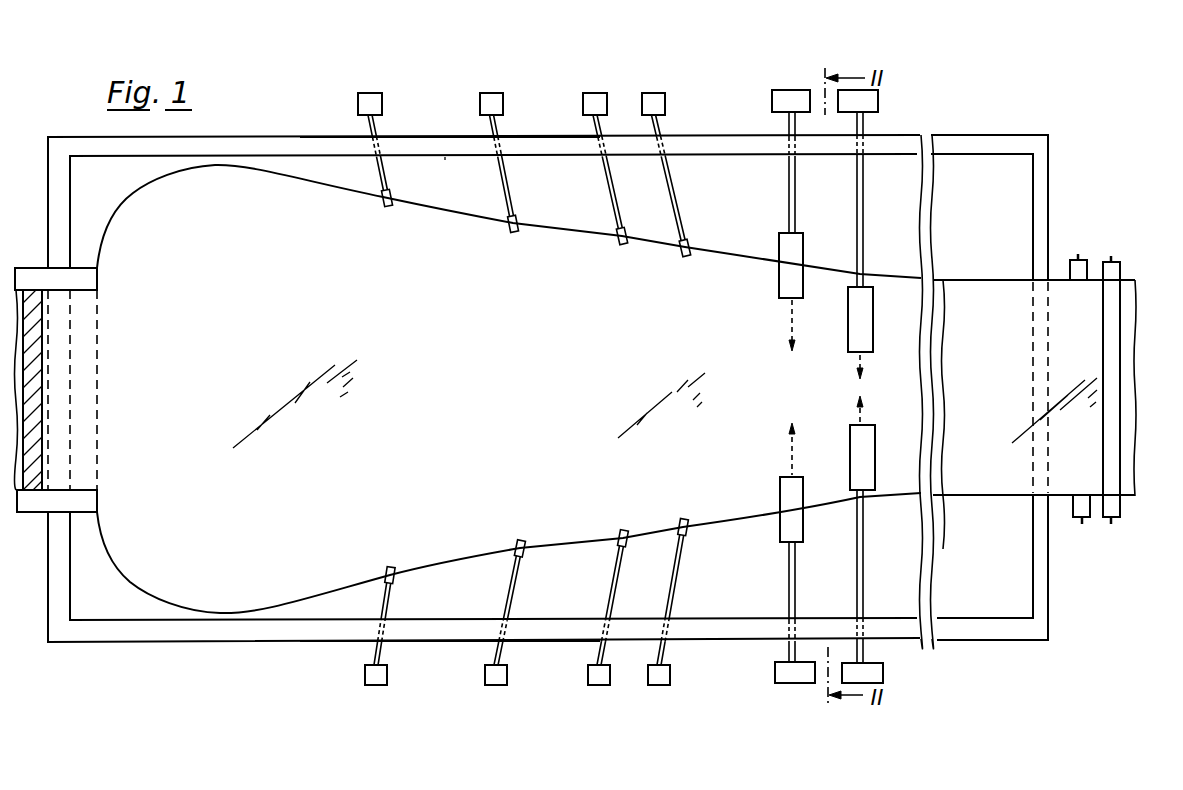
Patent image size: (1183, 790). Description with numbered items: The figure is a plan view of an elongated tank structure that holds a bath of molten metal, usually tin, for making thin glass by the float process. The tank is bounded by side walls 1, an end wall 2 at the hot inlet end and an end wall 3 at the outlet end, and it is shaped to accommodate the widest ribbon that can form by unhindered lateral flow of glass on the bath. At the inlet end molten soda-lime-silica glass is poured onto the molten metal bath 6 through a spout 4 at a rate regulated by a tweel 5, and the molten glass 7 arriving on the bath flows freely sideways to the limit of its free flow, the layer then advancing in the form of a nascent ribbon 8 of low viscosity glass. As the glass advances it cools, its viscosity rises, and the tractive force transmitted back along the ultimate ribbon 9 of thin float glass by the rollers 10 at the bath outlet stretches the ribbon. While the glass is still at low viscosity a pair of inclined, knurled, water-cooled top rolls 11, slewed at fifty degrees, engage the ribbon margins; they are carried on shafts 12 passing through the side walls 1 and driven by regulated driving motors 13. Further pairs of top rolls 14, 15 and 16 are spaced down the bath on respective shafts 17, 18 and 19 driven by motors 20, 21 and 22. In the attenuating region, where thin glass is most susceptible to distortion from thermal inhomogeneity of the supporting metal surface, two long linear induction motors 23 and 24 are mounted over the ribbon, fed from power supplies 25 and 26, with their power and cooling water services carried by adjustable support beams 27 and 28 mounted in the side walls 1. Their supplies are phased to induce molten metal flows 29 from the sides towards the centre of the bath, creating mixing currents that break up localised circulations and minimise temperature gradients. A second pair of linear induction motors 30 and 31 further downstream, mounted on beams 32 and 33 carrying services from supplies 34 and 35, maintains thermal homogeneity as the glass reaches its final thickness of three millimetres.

The side walls 1 is at (268, 144).
The end wall 2 is at (58, 185).
The end wall 3 is at (1043, 205).
The spout 4 is at (34, 506).
The tweel 5 is at (34, 292).
The molten metal bath 6 is at (448, 176).
The molten glass 7 is at (118, 404).
The glass bulb 8 is at (221, 406).
The ultimate ribbon 9 is at (983, 397).
The rollers 10 is at (1080, 268).
The top rolls 11 is at (382, 210).
The shafts 12 is at (378, 125).
The driving motors 13 is at (374, 100).
The top rolls 14 is at (510, 236).
The top rolls 15 is at (620, 246).
The top rolls 16 is at (683, 258).
The shafts 17 is at (500, 125).
The shafts 18 is at (603, 126).
The shafts 19 is at (662, 125).
The motors 20 is at (497, 100).
The motors 21 is at (595, 98).
The motors 22 is at (660, 98).
The linear induction motor 23 is at (797, 252).
The linear induction motor 24 is at (798, 524).
The power supply 25 is at (782, 103).
The power supply 26 is at (787, 678).
The adjustable support beam 27 is at (788, 195).
The adjustable support beam 28 is at (788, 583).
The molten metal flows 29 is at (785, 320).
The linear induction motor 30 is at (862, 320).
The linear induction motor 31 is at (862, 458).
The beam 32 is at (863, 184).
The beam 33 is at (868, 656).
The supply 34 is at (870, 100).
The supply 35 is at (880, 676).